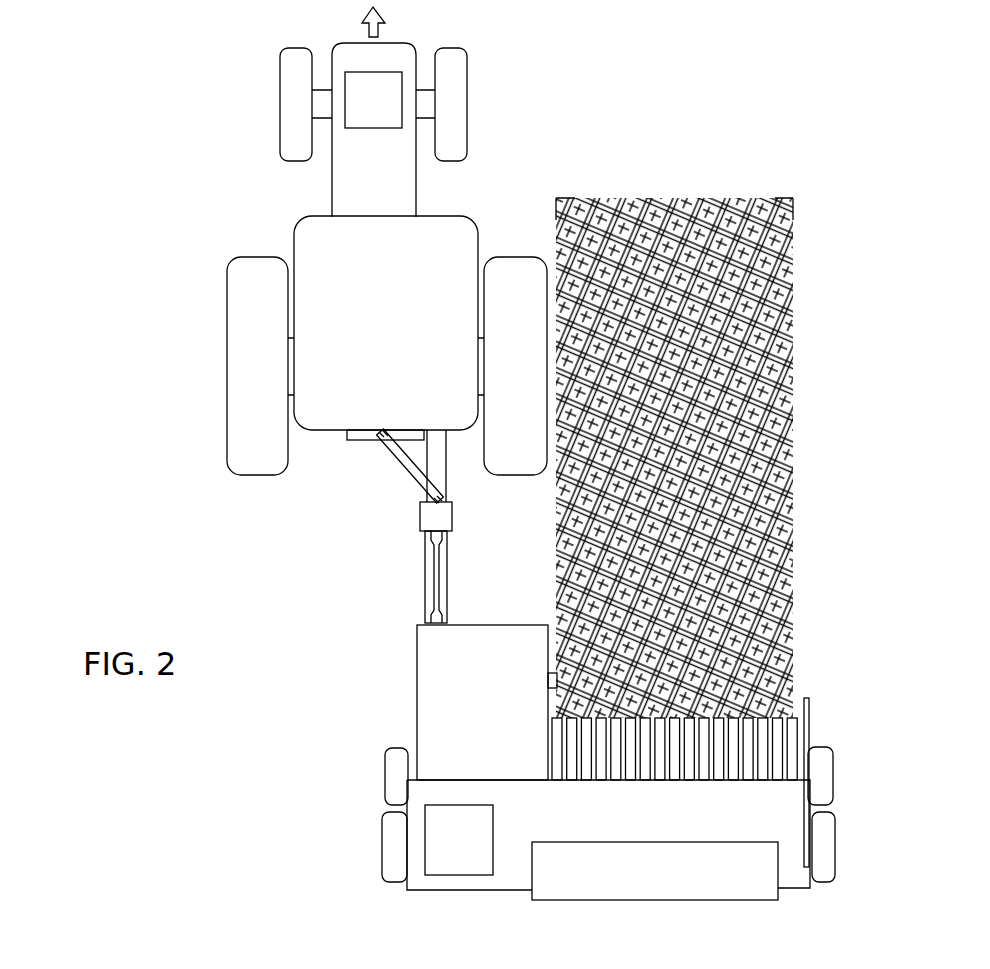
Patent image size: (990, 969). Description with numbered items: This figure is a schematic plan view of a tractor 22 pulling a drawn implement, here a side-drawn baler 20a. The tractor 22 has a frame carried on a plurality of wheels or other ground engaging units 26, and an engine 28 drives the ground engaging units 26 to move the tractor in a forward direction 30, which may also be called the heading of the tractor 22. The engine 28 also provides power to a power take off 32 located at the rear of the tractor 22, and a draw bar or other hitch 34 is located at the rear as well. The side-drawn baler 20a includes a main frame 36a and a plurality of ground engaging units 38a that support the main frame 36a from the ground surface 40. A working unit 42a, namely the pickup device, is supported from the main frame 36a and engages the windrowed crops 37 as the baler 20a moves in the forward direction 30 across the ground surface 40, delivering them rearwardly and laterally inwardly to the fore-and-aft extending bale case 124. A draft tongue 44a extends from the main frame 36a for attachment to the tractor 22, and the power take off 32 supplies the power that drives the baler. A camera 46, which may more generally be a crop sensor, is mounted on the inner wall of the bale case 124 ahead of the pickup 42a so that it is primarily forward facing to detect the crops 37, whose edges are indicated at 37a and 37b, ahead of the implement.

The side-drawn baler 20a is at (638, 774).
The tractor 22 is at (350, 315).
The ground engaging units 26 is at (295, 118).
The engine 28 is at (389, 113).
The forward direction 30 is at (367, 31).
The power take off 32 is at (382, 437).
The draw bar 34 is at (440, 438).
The main frame 36a is at (790, 875).
The crops 37 is at (693, 438).
The first crop edge 37a is at (560, 226).
The second crop edge 37b is at (793, 226).
The ground engaging units 38a is at (820, 848).
The ground surface 40 is at (711, 438).
The working unit 42a is at (778, 727).
The draft tongue 44a is at (442, 567).
The camera 46 is at (548, 680).
The bale case 124 is at (417, 660).